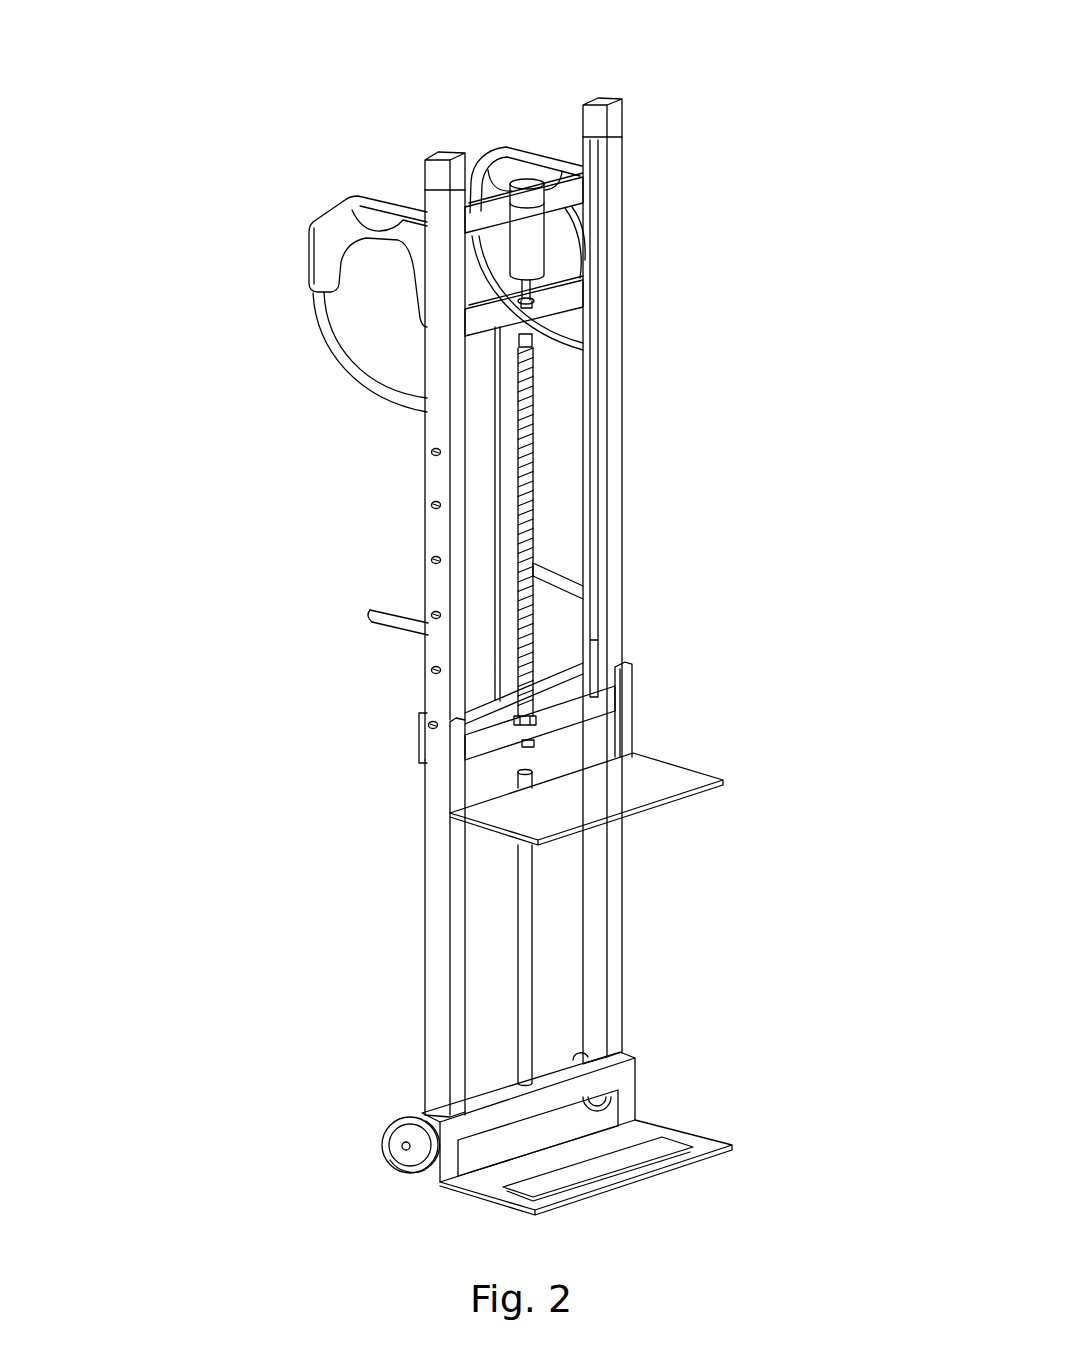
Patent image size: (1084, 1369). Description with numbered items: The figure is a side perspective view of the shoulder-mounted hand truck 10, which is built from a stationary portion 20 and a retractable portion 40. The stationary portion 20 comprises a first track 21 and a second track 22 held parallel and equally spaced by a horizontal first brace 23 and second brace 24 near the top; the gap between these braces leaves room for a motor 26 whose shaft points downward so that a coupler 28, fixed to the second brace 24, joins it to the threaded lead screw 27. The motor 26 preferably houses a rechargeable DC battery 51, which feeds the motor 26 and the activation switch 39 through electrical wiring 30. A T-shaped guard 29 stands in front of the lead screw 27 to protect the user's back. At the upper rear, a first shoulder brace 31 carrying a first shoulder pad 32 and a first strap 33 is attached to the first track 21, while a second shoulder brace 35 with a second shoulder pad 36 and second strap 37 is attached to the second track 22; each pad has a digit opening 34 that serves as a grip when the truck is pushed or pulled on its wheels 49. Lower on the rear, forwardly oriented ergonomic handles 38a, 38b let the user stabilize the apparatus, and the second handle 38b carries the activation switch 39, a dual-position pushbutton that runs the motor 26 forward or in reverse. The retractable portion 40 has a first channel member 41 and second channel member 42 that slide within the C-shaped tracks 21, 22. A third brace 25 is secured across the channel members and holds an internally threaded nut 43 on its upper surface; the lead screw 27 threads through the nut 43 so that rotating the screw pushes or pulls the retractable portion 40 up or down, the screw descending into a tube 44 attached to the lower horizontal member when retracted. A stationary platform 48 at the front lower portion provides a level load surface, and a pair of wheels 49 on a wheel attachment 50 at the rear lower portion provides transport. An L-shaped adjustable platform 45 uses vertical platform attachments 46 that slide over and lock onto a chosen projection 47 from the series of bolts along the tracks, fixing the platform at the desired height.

The shoulder-mounted hand truck 10 is at (168, 136).
The stationary portion 20 is at (242, 400).
The first track 21 is at (613, 597).
The second track 22 is at (440, 527).
The first brace 23 is at (600, 192).
The second brace 24 is at (470, 336).
The third brace 25 is at (592, 715).
The motor 26 is at (535, 240).
The lead screw 27 is at (520, 478).
The coupler 28 is at (530, 330).
The T-shaped guard 29 is at (508, 417).
The electrical wiring 30 is at (474, 216).
The first shoulder brace 31 is at (520, 148).
The first shoulder pad 32 is at (497, 175).
The first strap 33 is at (598, 338).
The digit opening 34 is at (403, 207).
The second shoulder brace 35 is at (318, 222).
The second shoulder pad 36 is at (336, 225).
The second strap 37 is at (320, 305).
The first ergonomic handle 38a is at (563, 577).
The second ergonomic handle 38b is at (372, 611).
The activation switch 39 is at (400, 636).
The retractable portion 40 is at (722, 898).
The first channel member 41 is at (598, 652).
The second channel member 42 is at (440, 955).
The internally threaded nut 43 is at (537, 740).
The tube 44 is at (522, 920).
The adjustable platform 45 is at (687, 780).
The vertical platform attachment 46 is at (628, 708).
The projections 47 is at (427, 727).
The stationary platform 48 is at (690, 1160).
The wheels 49 is at (590, 1110).
The wheel attachment 50 is at (400, 1135).
The rechargeable DC battery 51 is at (531, 183).